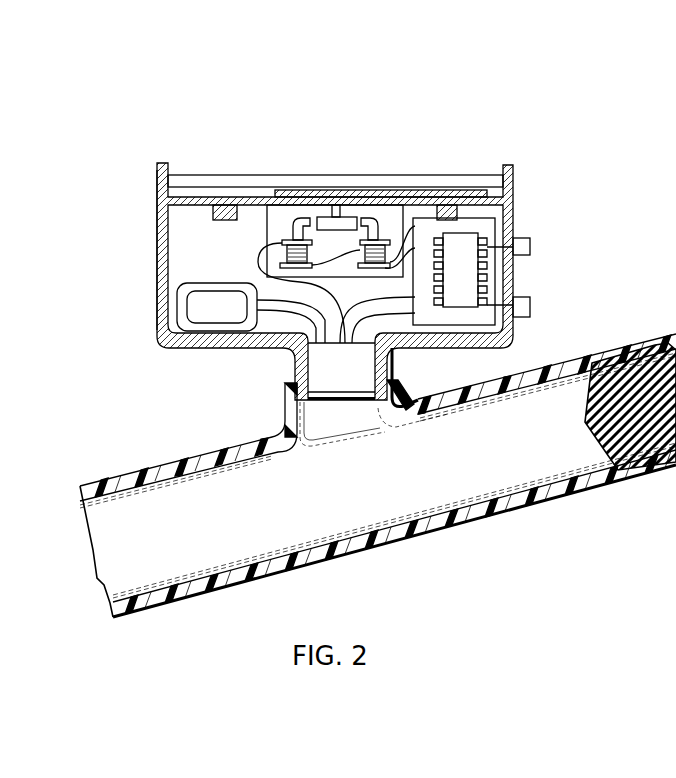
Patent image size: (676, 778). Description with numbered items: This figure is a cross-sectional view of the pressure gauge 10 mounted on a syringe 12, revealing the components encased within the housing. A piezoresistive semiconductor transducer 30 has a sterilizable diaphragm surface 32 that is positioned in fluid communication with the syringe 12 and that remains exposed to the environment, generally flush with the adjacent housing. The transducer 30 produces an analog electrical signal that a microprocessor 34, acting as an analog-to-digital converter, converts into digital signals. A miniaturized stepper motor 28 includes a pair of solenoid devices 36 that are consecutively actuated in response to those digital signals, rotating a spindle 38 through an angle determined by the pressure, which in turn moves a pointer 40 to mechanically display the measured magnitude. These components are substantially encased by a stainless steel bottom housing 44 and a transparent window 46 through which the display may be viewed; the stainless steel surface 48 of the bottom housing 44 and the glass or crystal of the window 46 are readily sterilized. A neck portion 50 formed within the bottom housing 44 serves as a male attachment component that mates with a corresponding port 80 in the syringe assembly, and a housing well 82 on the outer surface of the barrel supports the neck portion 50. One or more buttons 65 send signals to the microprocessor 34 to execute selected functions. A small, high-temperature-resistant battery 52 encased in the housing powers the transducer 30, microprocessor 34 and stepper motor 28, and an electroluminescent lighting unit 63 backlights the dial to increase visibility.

The pressure gauge 10 is at (578, 151).
The syringe 12 is at (433, 485).
The stepper motor 28 is at (262, 207).
The piezoresistive semiconductor transducer 30 is at (340, 368).
The diaphragm surface 32 is at (342, 392).
The microprocessor 34 is at (490, 235).
The solenoid devices 36 is at (288, 240).
The spindle 38 is at (330, 222).
The pointer 40 is at (360, 195).
The bottom housing 44 is at (162, 222).
The transparent window 46 is at (203, 178).
The stainless steel surface 48 is at (160, 250).
The neck portion 50 is at (407, 383).
The battery 52 is at (212, 308).
The electroluminescent lighting unit 63 is at (222, 208).
The buttons 65 is at (533, 246).
The port 80 is at (337, 421).
The housing well 82 is at (293, 417).